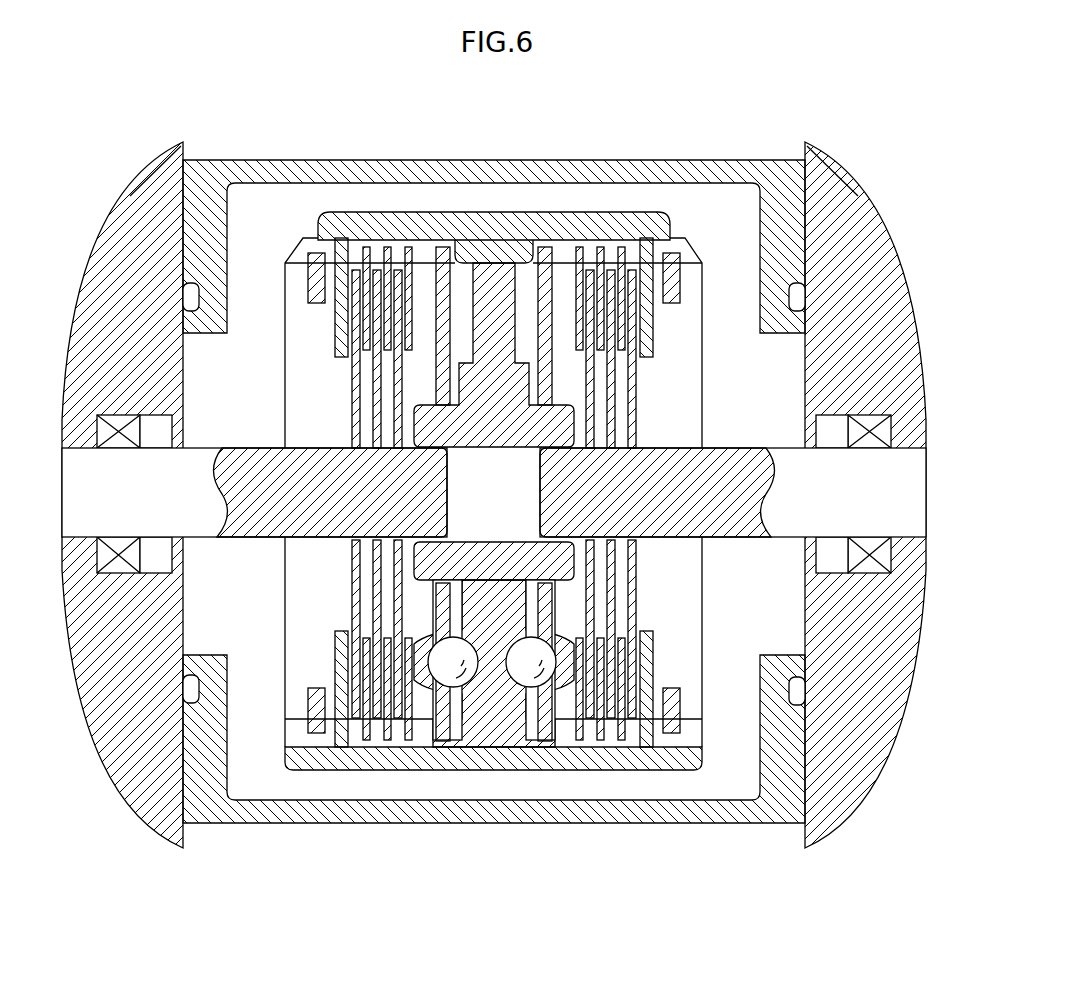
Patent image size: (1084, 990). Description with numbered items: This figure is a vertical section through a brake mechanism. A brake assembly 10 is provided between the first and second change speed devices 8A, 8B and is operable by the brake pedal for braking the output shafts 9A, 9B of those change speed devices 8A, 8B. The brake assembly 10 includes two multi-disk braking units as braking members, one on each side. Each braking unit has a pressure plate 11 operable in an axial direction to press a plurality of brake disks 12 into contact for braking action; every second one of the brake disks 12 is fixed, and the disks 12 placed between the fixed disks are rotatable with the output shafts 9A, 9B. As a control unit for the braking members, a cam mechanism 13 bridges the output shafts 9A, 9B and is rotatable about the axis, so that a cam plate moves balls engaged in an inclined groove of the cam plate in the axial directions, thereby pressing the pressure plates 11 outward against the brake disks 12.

The first change speed device 8A is at (123, 203).
The second change speed device 8B is at (865, 203).
The output shaft 9A is at (212, 447).
The output shaft 9B is at (776, 447).
The brake assembly 10 is at (700, 254).
The pressure plate 11 is at (433, 730).
The brake disks 12 is at (372, 596).
The cam mechanism 13 is at (488, 719).